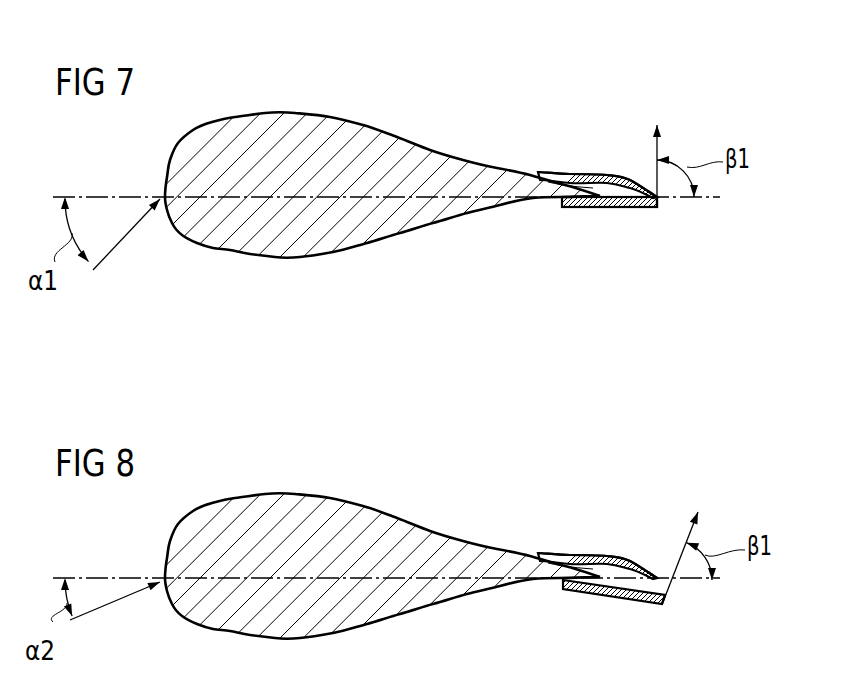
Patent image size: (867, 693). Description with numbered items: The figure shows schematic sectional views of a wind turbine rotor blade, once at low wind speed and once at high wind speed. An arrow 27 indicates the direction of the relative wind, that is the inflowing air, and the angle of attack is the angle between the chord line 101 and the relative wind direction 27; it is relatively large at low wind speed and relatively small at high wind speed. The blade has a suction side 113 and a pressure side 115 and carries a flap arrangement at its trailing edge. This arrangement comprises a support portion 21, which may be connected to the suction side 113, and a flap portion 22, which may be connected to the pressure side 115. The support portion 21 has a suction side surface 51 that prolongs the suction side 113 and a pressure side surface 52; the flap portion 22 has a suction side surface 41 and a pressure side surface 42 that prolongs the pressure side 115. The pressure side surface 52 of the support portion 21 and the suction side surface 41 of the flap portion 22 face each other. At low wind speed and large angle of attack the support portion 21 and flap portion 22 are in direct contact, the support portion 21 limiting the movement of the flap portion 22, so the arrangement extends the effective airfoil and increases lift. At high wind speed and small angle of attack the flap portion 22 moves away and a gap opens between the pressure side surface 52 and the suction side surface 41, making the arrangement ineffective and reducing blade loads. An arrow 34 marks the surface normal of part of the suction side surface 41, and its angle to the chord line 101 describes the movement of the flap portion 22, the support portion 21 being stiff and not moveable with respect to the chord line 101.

In FIG. 7, the chord line 101 is at (103, 195).
In FIG. 8, the chord line 101 is at (386, 548).
In FIG. 7, the relative wind direction 27 is at (112, 252).
In FIG. 8, the relative wind direction 27 is at (107, 605).
In FIG. 7, the suction side 113 is at (407, 132).
In FIG. 8, the suction side 113 is at (421, 550).
In FIG. 7, the pressure side 115 is at (382, 242).
In FIG. 8, the pressure side 115 is at (382, 634).
In FIG. 7, the support portion 21 is at (617, 172).
In FIG. 8, the support portion 21 is at (635, 555).
In FIG. 7, the flap portion 22 is at (608, 208).
In FIG. 8, the flap portion 22 is at (635, 597).
In FIG. 7, the suction side surface 51 is at (597, 172).
In FIG. 8, the suction side surface 51 is at (597, 538).
In FIG. 7, the pressure side surface 52 is at (585, 184).
In FIG. 8, the pressure side surface 52 is at (550, 543).
In FIG. 7, the suction side surface 41 is at (632, 190).
In FIG. 8, the suction side surface 41 is at (649, 555).
In FIG. 7, the pressure side surface 42 is at (638, 208).
In FIG. 8, the pressure side surface 42 is at (653, 629).
In FIG. 7, the surface normal 34 is at (662, 152).
In FIG. 8, the surface normal 34 is at (688, 530).